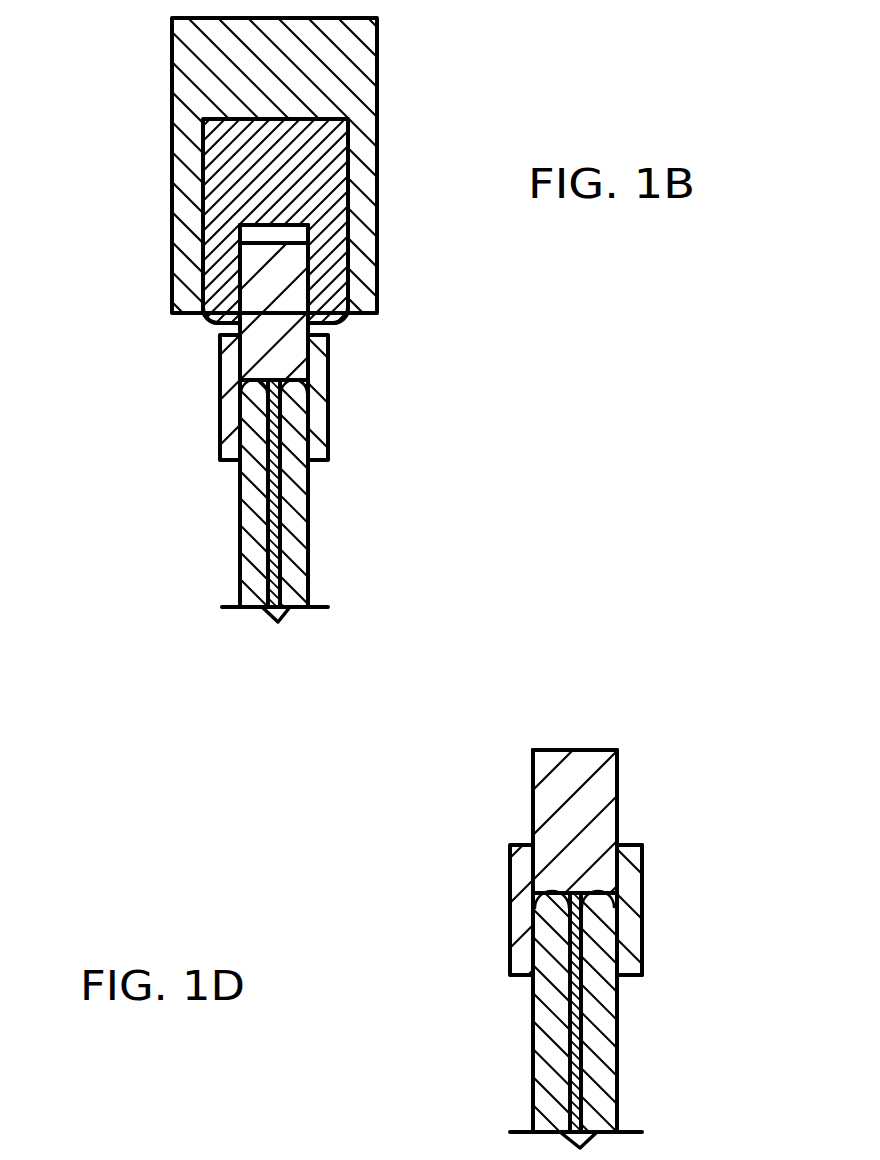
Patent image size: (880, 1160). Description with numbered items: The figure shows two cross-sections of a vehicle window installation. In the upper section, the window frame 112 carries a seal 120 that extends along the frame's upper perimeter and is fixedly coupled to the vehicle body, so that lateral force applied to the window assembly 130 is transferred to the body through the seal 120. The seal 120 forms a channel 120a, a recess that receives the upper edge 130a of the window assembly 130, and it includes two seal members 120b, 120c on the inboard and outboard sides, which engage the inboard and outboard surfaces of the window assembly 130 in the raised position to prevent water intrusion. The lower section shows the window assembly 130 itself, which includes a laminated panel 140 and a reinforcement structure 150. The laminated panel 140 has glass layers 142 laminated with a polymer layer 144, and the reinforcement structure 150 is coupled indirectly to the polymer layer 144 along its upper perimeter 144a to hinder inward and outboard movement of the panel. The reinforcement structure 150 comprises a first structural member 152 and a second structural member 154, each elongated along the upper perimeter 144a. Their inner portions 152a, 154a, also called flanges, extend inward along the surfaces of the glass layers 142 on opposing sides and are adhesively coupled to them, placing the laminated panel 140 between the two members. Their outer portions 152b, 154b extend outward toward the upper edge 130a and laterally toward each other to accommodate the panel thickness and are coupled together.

In FIG. 1B, the window frame 112 is at (172, 68).
In FIG. 1B, the seal 120 is at (276, 118).
In FIG. 1B, the channel 120a is at (254, 226).
In FIG. 1B, the seal member 120b is at (216, 321).
In FIG. 1B, the second leg of insert 120c is at (333, 322).
In FIG. 1D, the window assembly 130 is at (633, 703).
In FIG. 1B, the upper edge 130a is at (348, 196).
In FIG. 1D, the upper edge 130a is at (566, 750).
In FIG. 1B, the laminated panel 140 is at (184, 525).
In FIG. 1D, the glass layer 142 is at (533, 997).
In FIG. 1D, the polymer layer 144 is at (570, 1058).
In FIG. 1D, the upper perimeter 144a is at (580, 892).
In FIG. 1B, the reinforcement structure 150 is at (184, 375).
In FIG. 1D, the reinforcement structure 150 is at (428, 811).
In FIG. 1D, the first structural member 152 is at (508, 863).
In FIG. 1D, the inner portion 152a is at (531, 925).
In FIG. 1D, the outer portion 152b is at (533, 765).
In FIG. 1D, the second structural member 154 is at (643, 913).
In FIG. 1D, the inner portion 154a is at (643, 953).
In FIG. 1D, the outer portion 154b is at (647, 856).